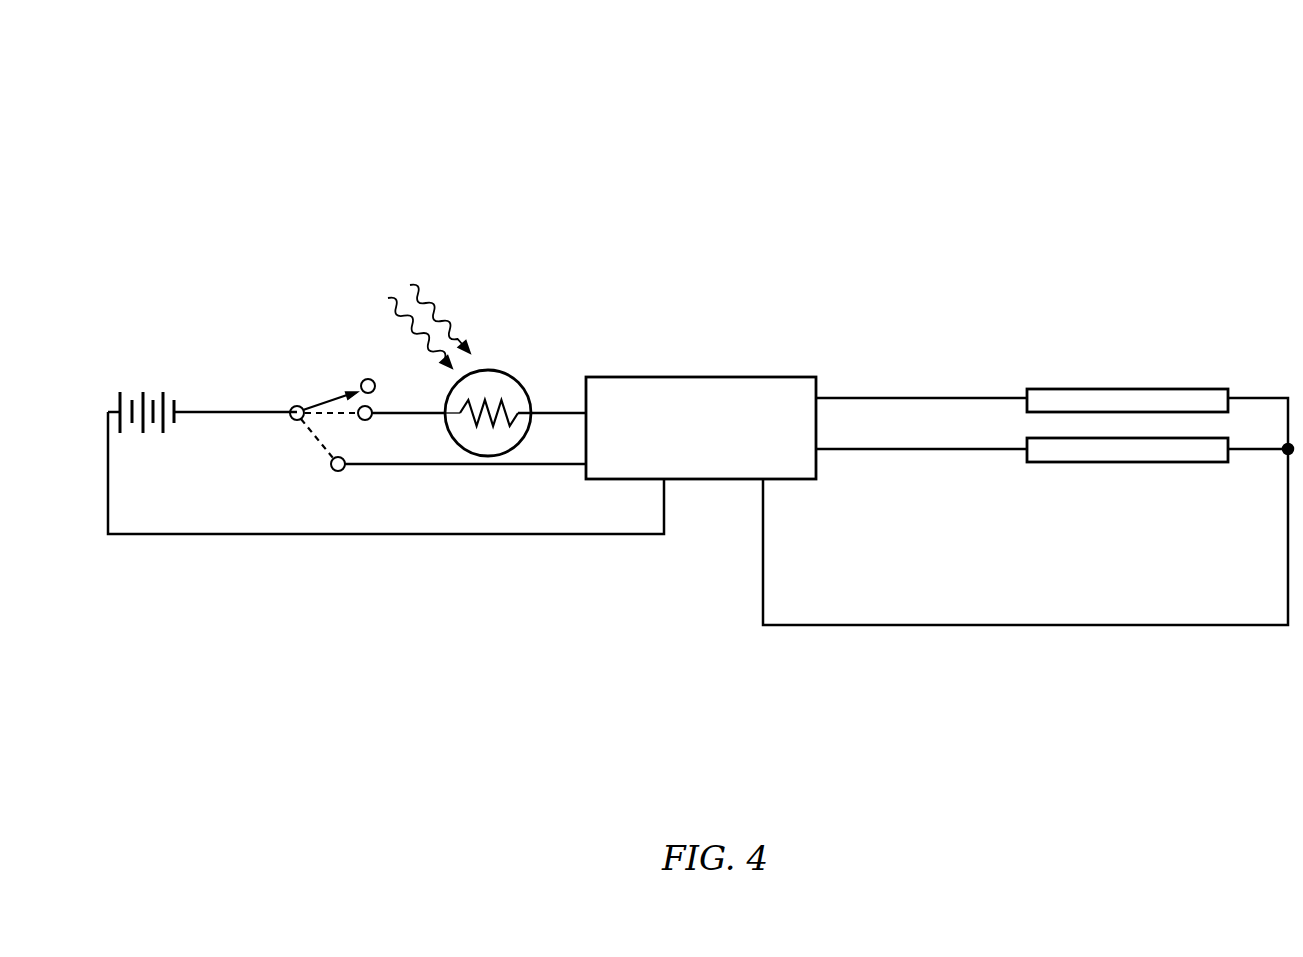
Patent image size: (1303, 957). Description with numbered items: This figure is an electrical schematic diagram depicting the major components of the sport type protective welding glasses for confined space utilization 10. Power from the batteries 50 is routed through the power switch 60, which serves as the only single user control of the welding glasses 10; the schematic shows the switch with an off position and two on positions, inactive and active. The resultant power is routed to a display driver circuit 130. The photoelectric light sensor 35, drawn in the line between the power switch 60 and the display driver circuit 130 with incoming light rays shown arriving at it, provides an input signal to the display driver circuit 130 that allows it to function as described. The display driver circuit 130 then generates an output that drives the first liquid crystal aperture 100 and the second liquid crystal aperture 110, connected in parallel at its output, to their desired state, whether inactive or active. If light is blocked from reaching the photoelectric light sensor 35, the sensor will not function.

The sport type protective welding glasses for confined space utilization 10 is at (1152, 190).
The photoelectric light sensor 35 is at (522, 388).
The batteries 50 is at (144, 398).
The power switch 60 is at (343, 393).
The first liquid crystal aperture 100 is at (1110, 395).
The second liquid crystal aperture 110 is at (1132, 448).
The display driver circuit 130 is at (778, 407).